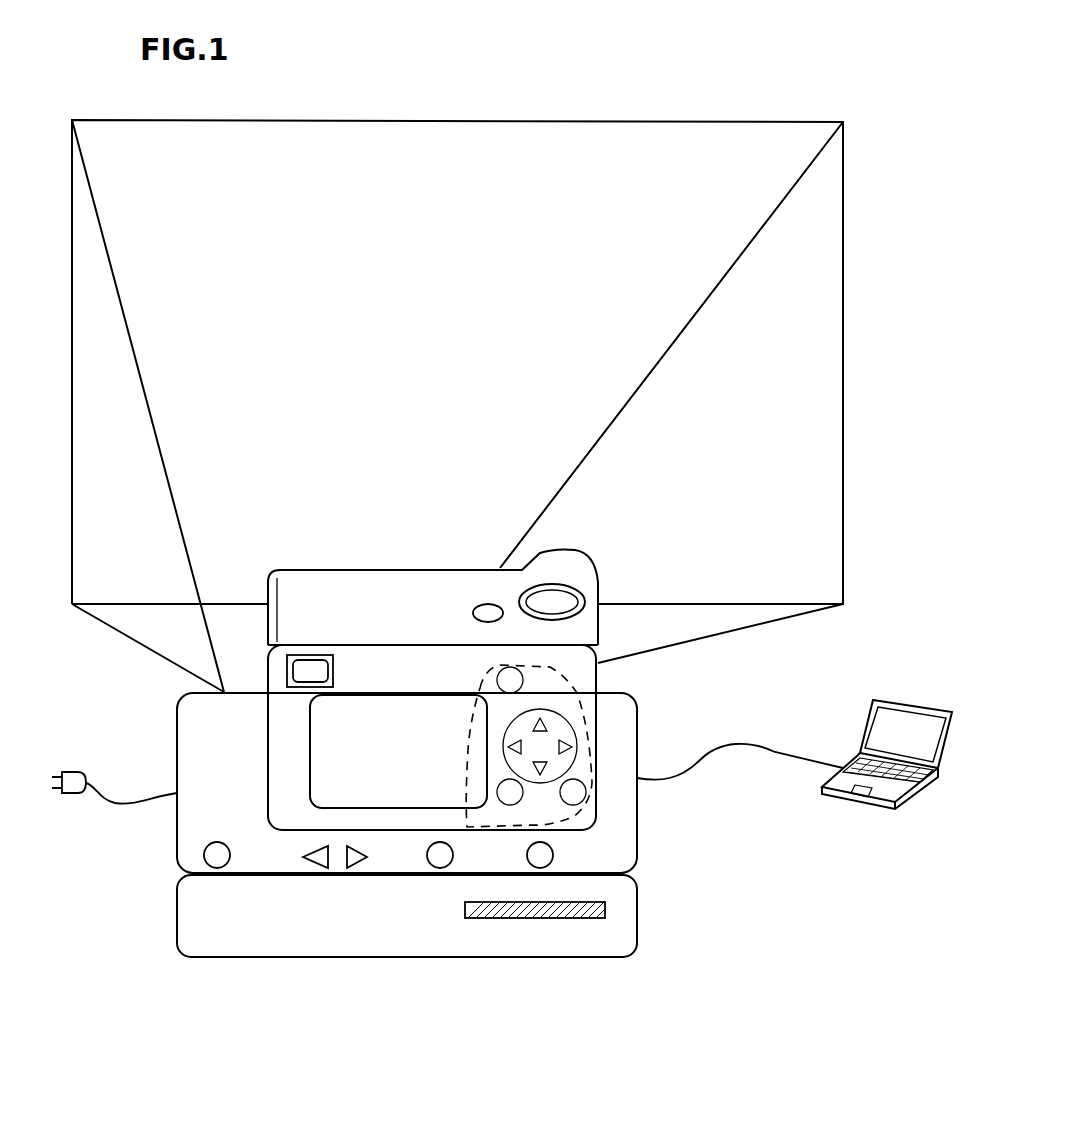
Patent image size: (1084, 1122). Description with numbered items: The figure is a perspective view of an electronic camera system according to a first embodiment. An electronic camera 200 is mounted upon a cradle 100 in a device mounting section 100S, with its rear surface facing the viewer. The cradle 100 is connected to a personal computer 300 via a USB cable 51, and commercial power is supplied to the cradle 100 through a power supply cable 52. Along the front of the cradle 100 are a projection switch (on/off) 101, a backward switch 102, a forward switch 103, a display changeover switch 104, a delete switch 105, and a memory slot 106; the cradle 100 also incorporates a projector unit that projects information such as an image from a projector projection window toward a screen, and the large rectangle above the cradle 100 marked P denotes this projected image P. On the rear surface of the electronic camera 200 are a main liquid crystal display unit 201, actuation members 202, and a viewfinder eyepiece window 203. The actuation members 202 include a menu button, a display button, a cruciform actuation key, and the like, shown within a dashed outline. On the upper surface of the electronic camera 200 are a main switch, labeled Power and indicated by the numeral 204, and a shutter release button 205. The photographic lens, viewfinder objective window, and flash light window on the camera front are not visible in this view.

The projected image P is at (397, 132).
The device mounting section 100S is at (228, 753).
The cradle 100 is at (393, 936).
The projection switch (on/off) 101 is at (213, 868).
The backward switch 102 is at (318, 868).
The forward switch 103 is at (355, 868).
The display changeover switch 104 is at (441, 868).
The delete switch 105 is at (553, 862).
The memory slot 106 is at (563, 918).
The electronic camera 200 is at (598, 678).
The main liquid crystal display unit 201 is at (378, 705).
The actuation members 202 is at (477, 717).
The viewfinder eyepiece window 203 is at (309, 655).
The power switch 204 is at (488, 604).
The shutter release button 205 is at (553, 600).
The USB cable 51 is at (743, 748).
The power supply cable 52 is at (96, 790).
The personal computer 300 is at (856, 803).